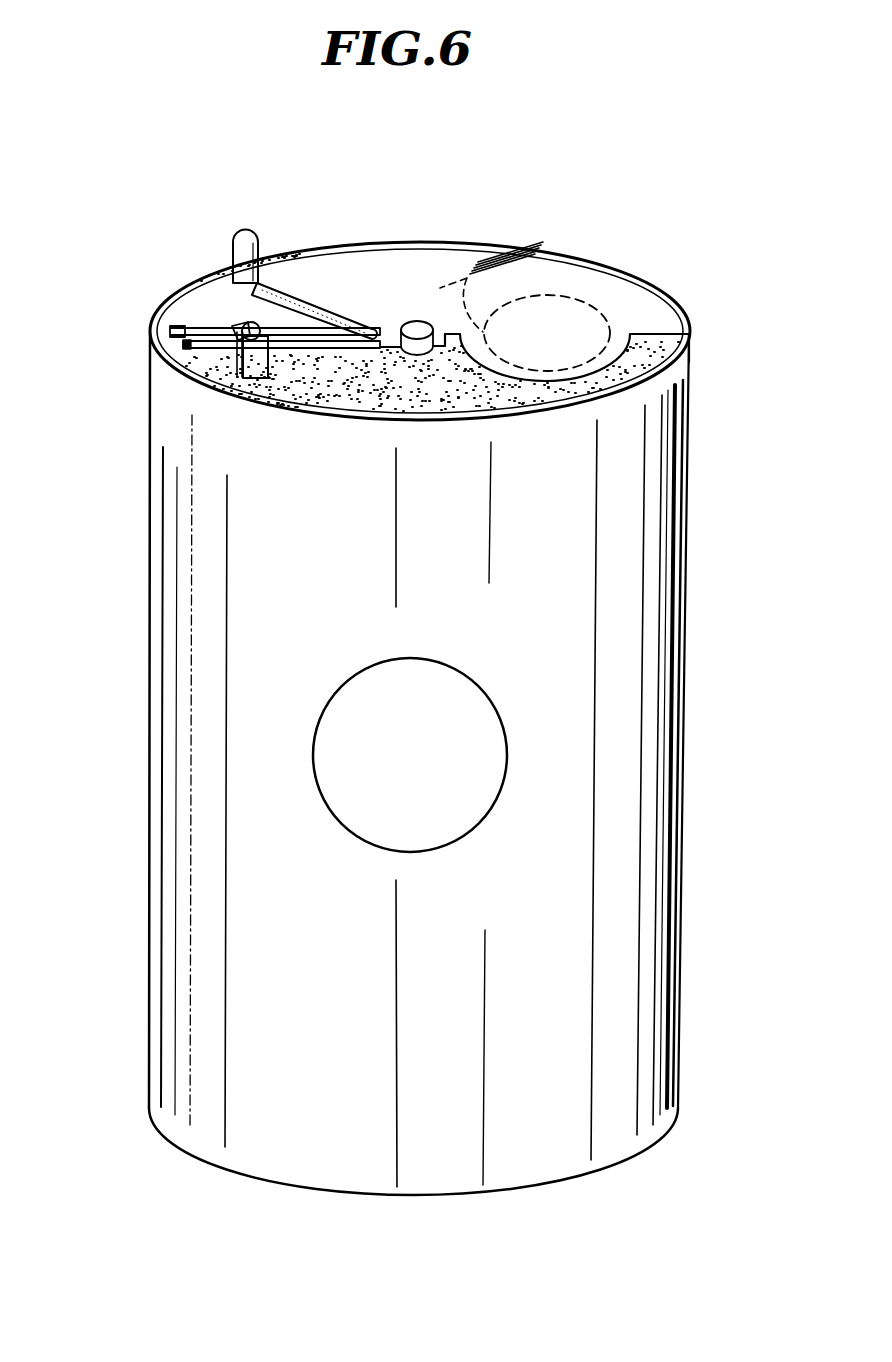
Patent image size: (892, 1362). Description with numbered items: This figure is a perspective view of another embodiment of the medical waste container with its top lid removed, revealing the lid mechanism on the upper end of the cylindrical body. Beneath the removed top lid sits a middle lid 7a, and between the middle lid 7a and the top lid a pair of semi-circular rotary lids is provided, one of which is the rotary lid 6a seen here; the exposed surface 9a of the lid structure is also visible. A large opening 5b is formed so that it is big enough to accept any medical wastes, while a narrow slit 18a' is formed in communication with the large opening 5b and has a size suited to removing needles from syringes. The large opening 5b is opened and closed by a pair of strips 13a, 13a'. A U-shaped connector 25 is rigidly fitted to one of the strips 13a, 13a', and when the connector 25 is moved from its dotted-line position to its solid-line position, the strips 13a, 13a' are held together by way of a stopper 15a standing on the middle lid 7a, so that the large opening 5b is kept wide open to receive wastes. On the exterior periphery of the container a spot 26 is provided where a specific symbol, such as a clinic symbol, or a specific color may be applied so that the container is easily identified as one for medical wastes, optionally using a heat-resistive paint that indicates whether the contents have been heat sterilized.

The semi-circular rotary lid 6a is at (400, 267).
The filter layer surface 9a is at (438, 400).
The opening 5b is at (550, 330).
The narrow slit 18a' is at (491, 252).
The strip 13a is at (252, 220).
The middle lid 7a is at (207, 313).
The stopper 15a is at (176, 340).
The U-shaped connector 25 is at (233, 340).
The strip 13a' is at (268, 402).
The spot 26 is at (475, 722).